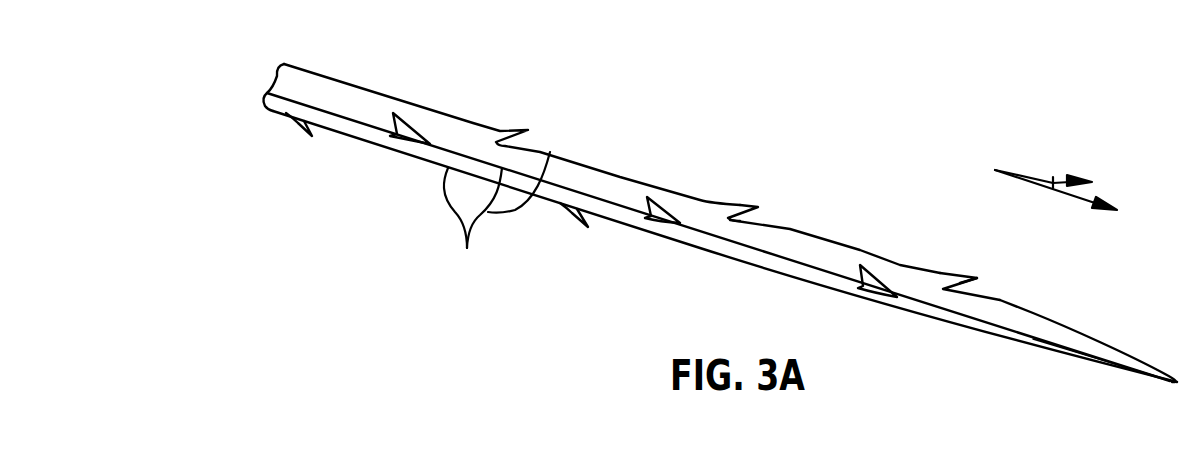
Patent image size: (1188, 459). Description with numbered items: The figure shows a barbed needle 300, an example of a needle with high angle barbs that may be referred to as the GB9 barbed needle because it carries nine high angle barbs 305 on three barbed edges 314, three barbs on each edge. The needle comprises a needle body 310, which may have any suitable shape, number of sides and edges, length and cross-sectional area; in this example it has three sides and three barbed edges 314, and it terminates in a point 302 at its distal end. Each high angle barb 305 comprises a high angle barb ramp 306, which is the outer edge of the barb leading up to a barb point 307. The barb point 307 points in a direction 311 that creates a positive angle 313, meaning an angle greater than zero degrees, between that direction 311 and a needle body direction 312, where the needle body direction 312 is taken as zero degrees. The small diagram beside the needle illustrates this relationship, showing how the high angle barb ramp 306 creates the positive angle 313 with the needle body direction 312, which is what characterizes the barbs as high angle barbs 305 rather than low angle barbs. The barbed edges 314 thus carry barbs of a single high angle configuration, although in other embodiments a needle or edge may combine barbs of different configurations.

The barbed needle 300 is at (925, 165).
The point 302 is at (1157, 375).
The high angle barbs 305 is at (662, 208).
The high angle barb ramp 306 is at (953, 272).
The barb point 307 is at (980, 281).
The needle body 310 is at (597, 185).
The direction 311 is at (1018, 173).
The needle body direction 312 is at (1077, 203).
The positive angle 313 is at (1038, 178).
The barbed edges 314 is at (497, 213).